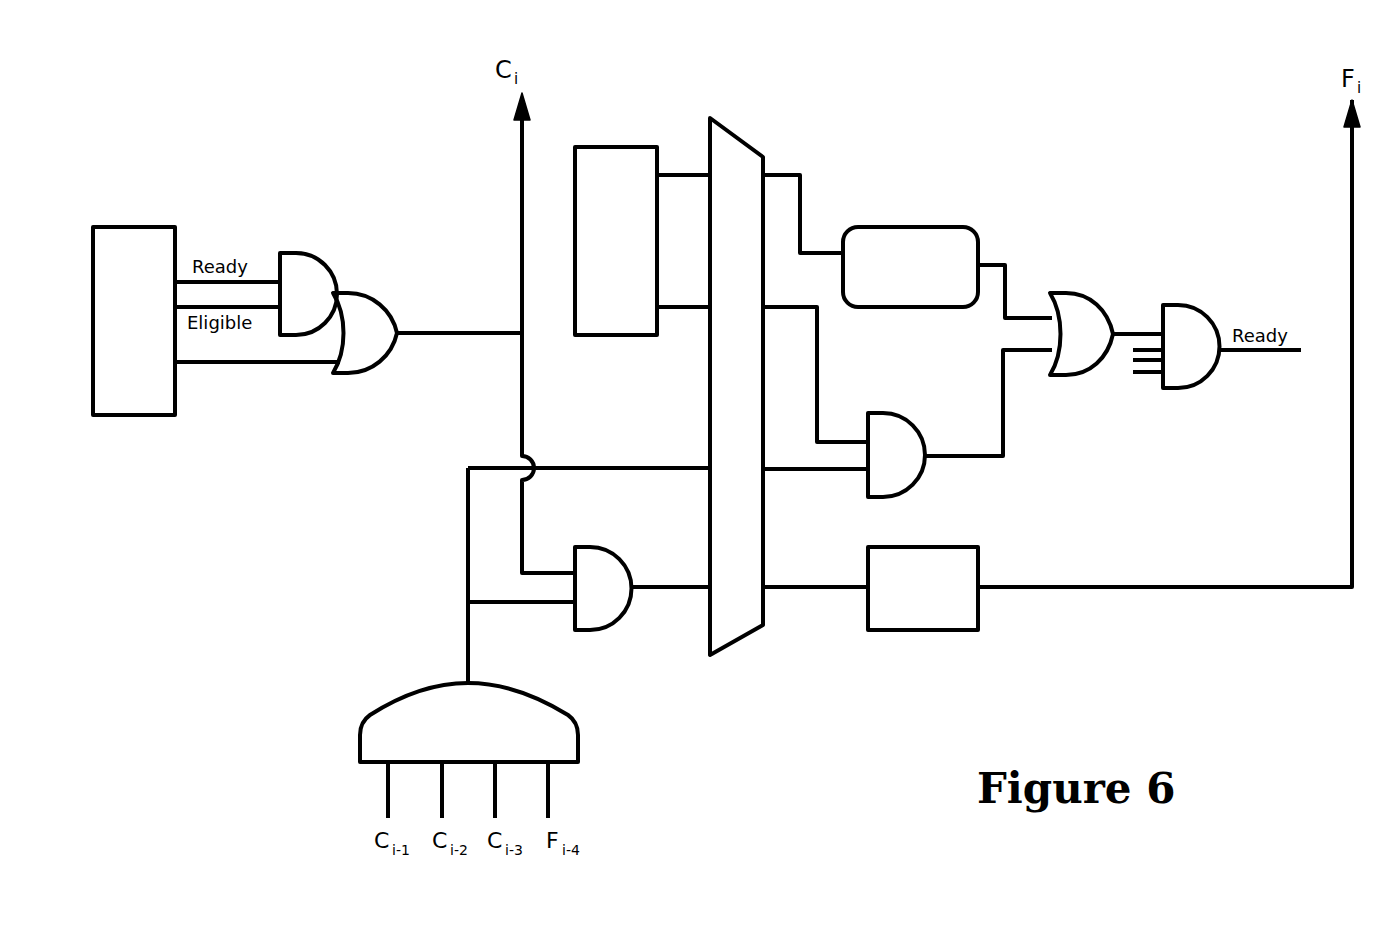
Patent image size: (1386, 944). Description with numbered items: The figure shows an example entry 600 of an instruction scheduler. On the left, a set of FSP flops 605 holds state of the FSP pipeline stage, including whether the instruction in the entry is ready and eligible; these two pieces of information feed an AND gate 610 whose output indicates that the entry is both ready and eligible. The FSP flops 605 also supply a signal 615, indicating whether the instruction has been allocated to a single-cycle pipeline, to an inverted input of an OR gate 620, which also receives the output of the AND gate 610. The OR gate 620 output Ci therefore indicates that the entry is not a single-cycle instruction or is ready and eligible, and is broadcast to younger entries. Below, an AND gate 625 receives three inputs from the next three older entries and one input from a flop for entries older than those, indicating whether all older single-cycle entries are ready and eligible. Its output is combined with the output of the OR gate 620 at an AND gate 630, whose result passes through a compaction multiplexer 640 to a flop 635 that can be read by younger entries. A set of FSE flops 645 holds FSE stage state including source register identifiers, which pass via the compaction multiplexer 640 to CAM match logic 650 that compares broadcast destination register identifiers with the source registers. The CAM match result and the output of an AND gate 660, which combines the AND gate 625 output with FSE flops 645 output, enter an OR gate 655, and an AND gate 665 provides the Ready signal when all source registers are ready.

The entry 600 is at (1058, 200).
The FSP flops 605 is at (134, 321).
The AND gate 610 is at (298, 253).
The signal 615 is at (253, 365).
The OR gate 620 is at (357, 293).
The AND gate 625 is at (469, 750).
The AND gate 630 is at (603, 588).
The flop 635 is at (923, 588).
The compaction multiplexer 640 is at (736, 640).
The FSE flops 645 is at (616, 241).
The CAM match logic 650 is at (910, 267).
The OR gate 655 is at (1081, 334).
The AND gate 660 is at (896, 455).
The AND gate 665 is at (1176, 346).